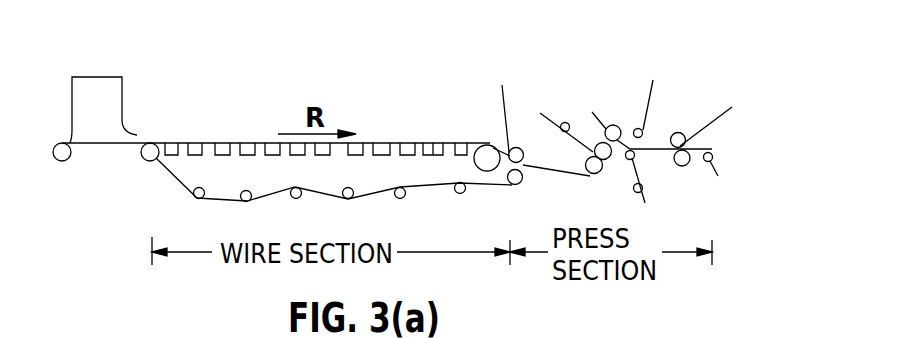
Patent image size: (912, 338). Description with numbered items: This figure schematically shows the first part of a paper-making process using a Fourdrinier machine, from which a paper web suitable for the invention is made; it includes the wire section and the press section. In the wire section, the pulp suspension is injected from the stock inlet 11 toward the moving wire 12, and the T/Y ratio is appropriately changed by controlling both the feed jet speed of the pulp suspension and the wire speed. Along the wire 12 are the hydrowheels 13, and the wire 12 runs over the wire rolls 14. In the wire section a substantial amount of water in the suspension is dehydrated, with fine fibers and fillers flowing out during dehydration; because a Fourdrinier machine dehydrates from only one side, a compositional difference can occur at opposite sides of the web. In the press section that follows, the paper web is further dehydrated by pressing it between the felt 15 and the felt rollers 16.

The stock inlet 11 is at (103, 77).
The wire 12 is at (165, 177).
The hydrowheels 13 is at (195, 141).
The wire rolls 14 is at (141, 158).
The felt 15 is at (502, 107).
The felt rollers 16 is at (590, 174).